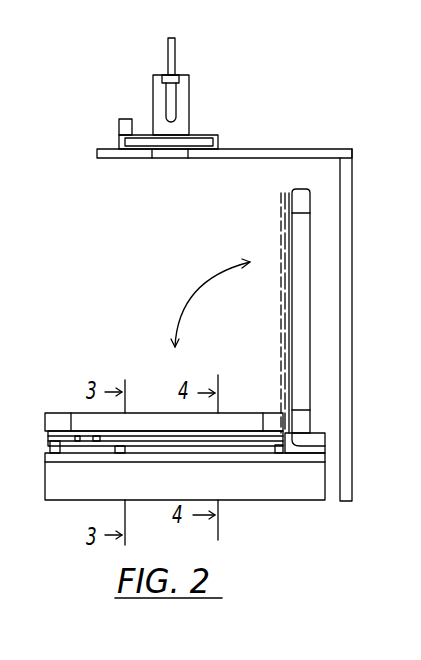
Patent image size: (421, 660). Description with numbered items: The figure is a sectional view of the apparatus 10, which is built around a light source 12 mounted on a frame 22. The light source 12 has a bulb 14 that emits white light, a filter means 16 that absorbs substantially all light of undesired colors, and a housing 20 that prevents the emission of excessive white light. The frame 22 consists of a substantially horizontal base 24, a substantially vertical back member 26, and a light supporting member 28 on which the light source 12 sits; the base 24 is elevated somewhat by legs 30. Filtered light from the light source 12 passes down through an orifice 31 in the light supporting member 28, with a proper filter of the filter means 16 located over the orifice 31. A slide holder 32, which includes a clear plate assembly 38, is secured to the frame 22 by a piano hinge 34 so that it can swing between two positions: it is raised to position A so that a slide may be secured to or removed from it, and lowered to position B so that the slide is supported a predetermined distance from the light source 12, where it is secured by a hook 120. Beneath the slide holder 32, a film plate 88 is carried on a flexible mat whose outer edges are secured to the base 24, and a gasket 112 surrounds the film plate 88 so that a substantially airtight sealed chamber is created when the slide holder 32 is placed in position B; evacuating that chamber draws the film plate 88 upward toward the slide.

The apparatus 10 is at (220, 353).
The light source 12 is at (156, 93).
The bulb 14 is at (167, 105).
The filter means 16 is at (130, 126).
The housing 20 is at (189, 80).
The frame 22 is at (352, 268).
The base 24 is at (268, 458).
The back member 26 is at (343, 390).
The light supporting member 28 is at (253, 149).
The legs 30 is at (225, 493).
The orifice 31 is at (166, 159).
The slide holder 32 is at (305, 332).
The piano hinge 34 is at (295, 440).
The clear plate assembly 38 is at (283, 368).
The film plate 88 is at (213, 443).
The gasket 112 is at (53, 440).
The hook 120 is at (42, 446).
The raised position A is at (302, 233).
The lowered position B is at (153, 420).